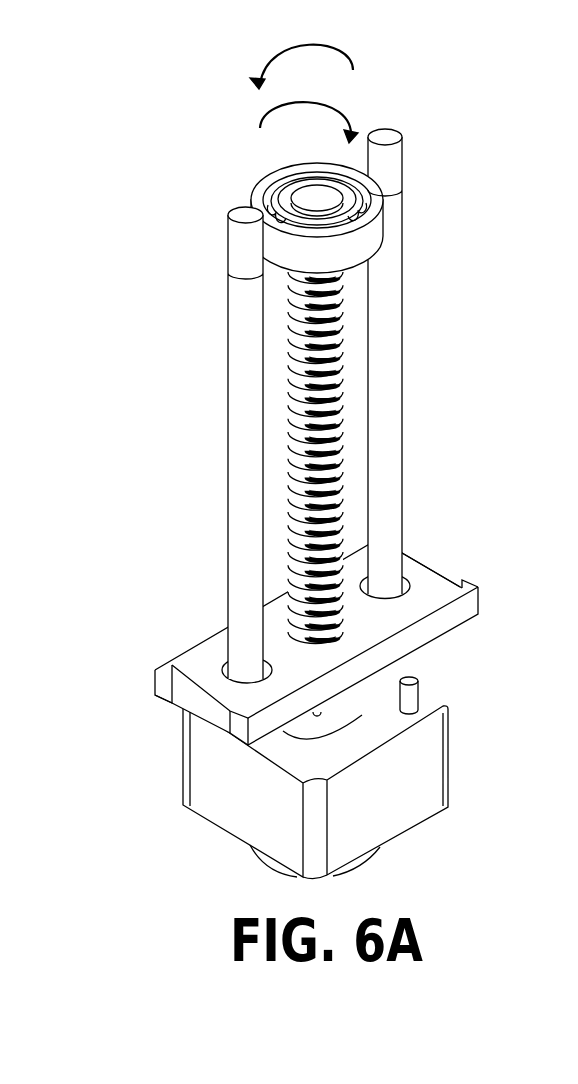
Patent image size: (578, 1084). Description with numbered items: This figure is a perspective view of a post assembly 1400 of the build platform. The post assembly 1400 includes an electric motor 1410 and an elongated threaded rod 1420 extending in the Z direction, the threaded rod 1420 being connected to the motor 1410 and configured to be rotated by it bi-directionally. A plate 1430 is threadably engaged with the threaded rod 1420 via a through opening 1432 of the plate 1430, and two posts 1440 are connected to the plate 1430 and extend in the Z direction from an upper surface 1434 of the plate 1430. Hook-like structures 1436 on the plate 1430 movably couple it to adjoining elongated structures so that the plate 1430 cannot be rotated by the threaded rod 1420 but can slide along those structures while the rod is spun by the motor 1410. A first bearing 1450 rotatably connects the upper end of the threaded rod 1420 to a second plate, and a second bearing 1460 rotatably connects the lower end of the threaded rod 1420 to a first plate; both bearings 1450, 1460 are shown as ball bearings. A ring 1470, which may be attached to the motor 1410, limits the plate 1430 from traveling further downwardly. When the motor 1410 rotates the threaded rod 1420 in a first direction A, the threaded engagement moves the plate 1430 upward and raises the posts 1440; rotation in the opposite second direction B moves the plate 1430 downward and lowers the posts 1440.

The post assembly 1400 is at (139, 193).
The electric motor 1410 is at (450, 791).
The threaded rod 1420 is at (340, 397).
The plate 1430 is at (472, 618).
The through opening 1432 is at (295, 638).
The upper surface 1434 is at (420, 609).
The hook-like structures 1436 is at (471, 584).
The posts 1440 is at (395, 300).
The first bearing 1450 is at (261, 192).
The second bearing 1460 is at (370, 853).
The ring 1470 is at (360, 715).